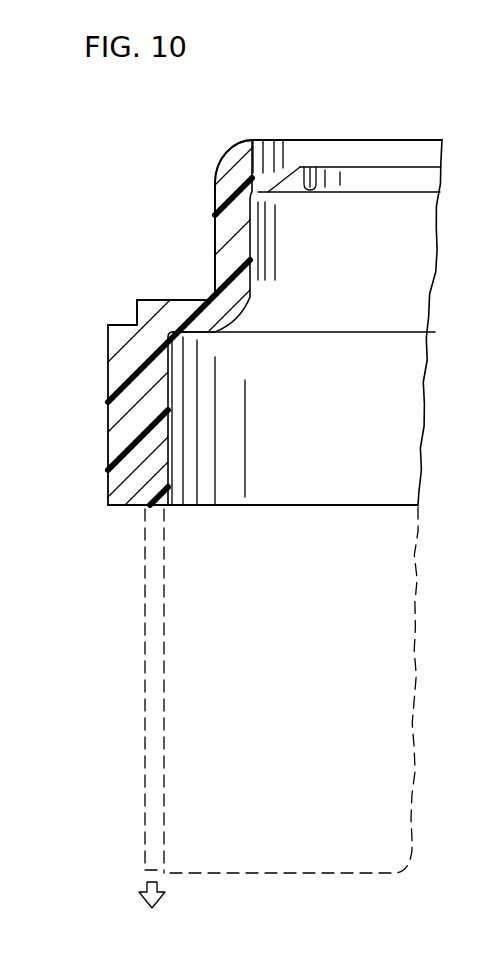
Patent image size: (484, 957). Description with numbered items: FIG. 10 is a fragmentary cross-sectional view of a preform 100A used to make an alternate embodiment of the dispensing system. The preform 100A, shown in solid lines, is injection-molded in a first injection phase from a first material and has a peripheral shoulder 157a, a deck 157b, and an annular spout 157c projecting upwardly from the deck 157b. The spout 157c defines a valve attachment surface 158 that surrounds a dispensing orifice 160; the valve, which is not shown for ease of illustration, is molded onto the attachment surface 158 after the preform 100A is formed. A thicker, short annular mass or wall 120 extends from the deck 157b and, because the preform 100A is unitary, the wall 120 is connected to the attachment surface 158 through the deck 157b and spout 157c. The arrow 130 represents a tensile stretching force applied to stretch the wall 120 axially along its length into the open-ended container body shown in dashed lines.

The preform 100A is at (108, 358).
The annular mass or wall 120 is at (117, 418).
The arrow 130 is at (145, 881).
The peripheral shoulder 157a is at (128, 323).
The deck 157b is at (173, 299).
The annular spout 157c is at (212, 197).
The valve attachment surface 158 is at (285, 139).
The dispensing orifice 160 is at (323, 177).